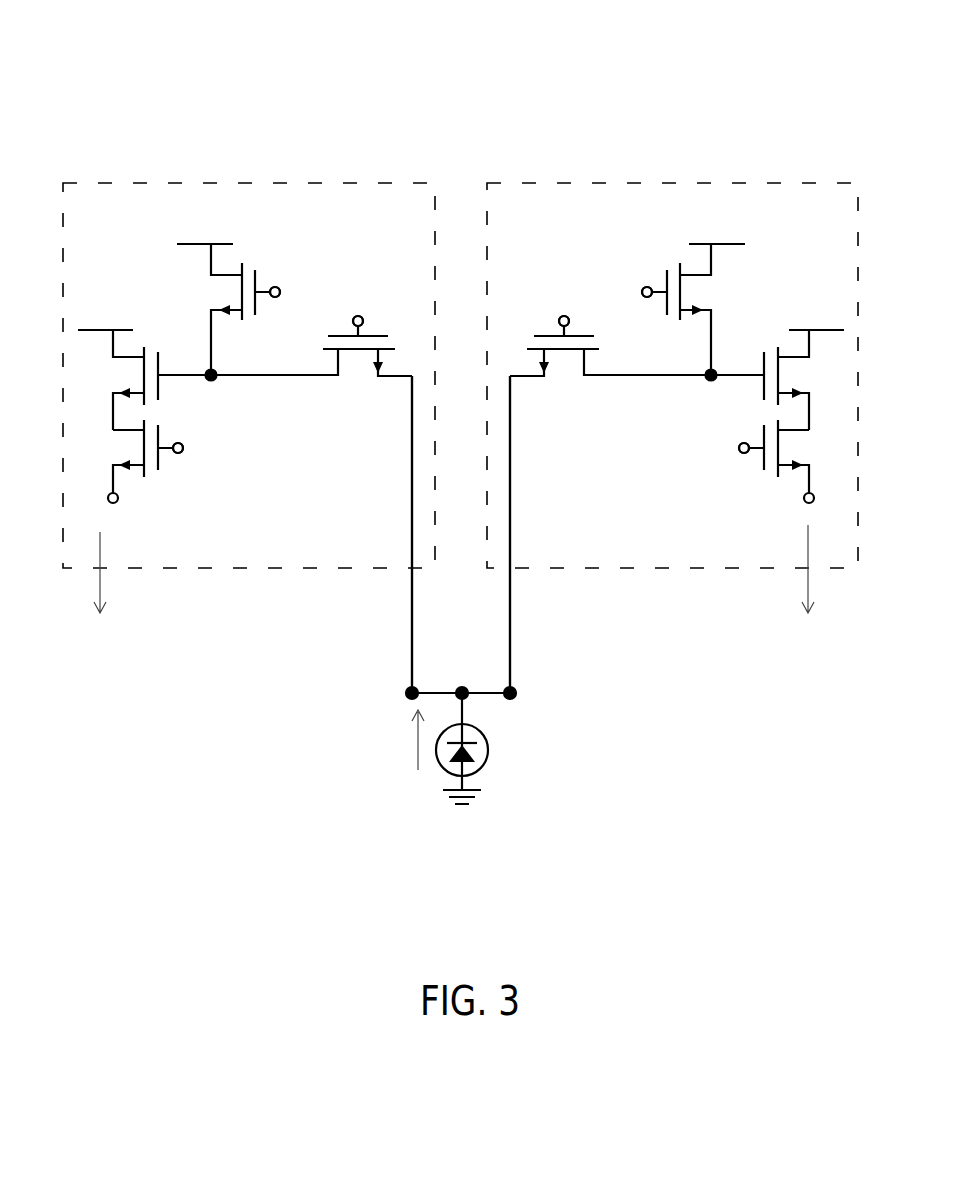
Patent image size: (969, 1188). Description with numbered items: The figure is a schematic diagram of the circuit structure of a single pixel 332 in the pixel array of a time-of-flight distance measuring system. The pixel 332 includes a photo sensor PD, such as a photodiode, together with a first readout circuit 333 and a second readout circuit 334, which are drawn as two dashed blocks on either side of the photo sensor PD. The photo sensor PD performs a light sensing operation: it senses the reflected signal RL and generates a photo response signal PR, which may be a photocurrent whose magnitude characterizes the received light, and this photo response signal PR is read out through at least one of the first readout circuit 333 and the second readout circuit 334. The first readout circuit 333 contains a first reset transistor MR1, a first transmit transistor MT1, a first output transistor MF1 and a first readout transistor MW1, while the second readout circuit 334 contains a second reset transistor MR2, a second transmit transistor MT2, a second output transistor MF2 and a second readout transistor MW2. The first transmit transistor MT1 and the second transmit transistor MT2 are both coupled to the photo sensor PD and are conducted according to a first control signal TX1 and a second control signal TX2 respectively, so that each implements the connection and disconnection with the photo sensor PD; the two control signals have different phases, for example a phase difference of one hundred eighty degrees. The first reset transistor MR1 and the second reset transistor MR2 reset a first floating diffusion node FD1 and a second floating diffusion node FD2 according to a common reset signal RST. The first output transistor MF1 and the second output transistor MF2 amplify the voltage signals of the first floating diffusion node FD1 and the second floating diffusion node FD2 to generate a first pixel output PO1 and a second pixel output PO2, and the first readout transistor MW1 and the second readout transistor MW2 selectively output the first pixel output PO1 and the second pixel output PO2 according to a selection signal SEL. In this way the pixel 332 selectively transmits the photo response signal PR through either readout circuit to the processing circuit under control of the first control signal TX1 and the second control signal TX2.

The pixel 332 is at (552, 24).
The first readout circuit 333 is at (247, 183).
The second readout circuit 334 is at (703, 183).
The first reset transistor MR1 is at (218, 309).
The first output transistor MF1 is at (142, 380).
The first readout transistor MW1 is at (128, 461).
The first transmit transistor MT1 is at (367, 365).
The second reset transistor MR2 is at (699, 309).
The second output transistor MF2 is at (777, 380).
The second readout transistor MW2 is at (791, 461).
The second transmit transistor MT2 is at (554, 365).
The first floating diffusion node FD1 is at (272, 393).
The second floating diffusion node FD2 is at (650, 394).
The first control signal TX1 is at (351, 305).
The second control signal TX2 is at (558, 305).
The reset signal RST is at (290, 277).
The selection signal SEL is at (202, 450).
The photo sensor PD is at (479, 748).
The photo response signal PR is at (401, 740).
The reflected signal RL is at (647, 683).
The first pixel output PO1 is at (129, 574).
The second pixel output PO2 is at (780, 569).